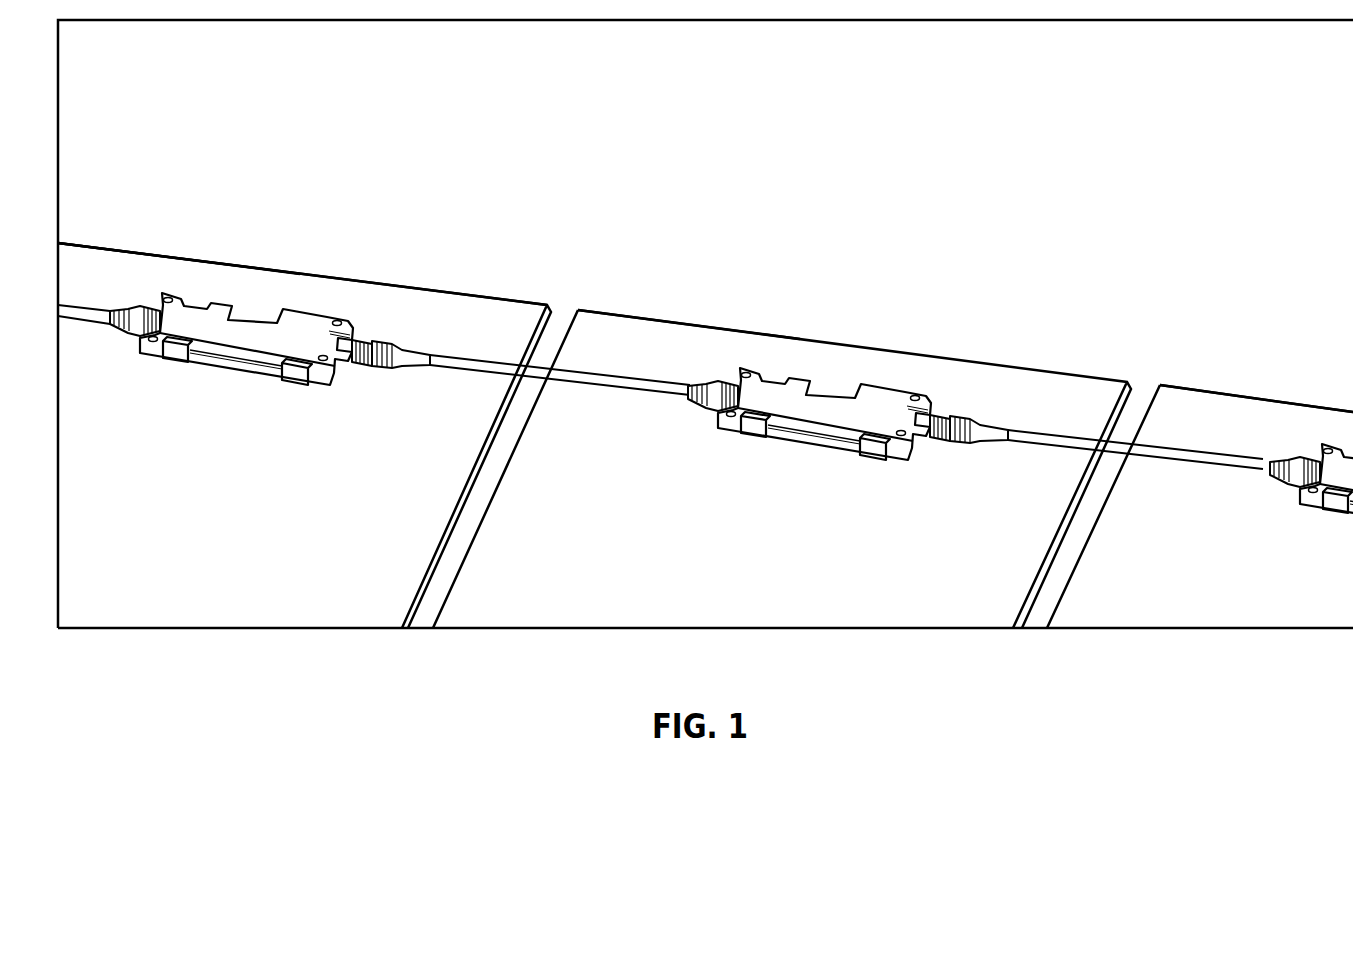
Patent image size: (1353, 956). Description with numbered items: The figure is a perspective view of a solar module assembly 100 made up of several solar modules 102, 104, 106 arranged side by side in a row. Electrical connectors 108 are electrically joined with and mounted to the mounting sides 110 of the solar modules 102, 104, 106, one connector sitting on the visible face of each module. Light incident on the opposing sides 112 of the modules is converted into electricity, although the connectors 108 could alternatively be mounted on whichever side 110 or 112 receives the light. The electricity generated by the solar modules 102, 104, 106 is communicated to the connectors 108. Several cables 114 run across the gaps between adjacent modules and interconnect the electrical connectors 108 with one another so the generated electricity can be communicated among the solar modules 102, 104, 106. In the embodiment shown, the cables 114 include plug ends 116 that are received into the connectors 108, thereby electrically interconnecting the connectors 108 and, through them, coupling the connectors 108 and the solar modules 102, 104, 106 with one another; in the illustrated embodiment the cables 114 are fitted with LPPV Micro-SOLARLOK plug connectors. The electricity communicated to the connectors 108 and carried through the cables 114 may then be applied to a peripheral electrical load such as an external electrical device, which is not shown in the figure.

The solar module assembly 100 is at (1113, 131).
The solar module 102 is at (468, 295).
The solar module 104 is at (1045, 370).
The solar module 106 is at (1184, 389).
The electrical connector 108 is at (201, 328).
The mounting side 110 is at (84, 266).
The opposing side 112 is at (139, 253).
The cable 114 is at (564, 302).
The plug end 116 is at (967, 417).